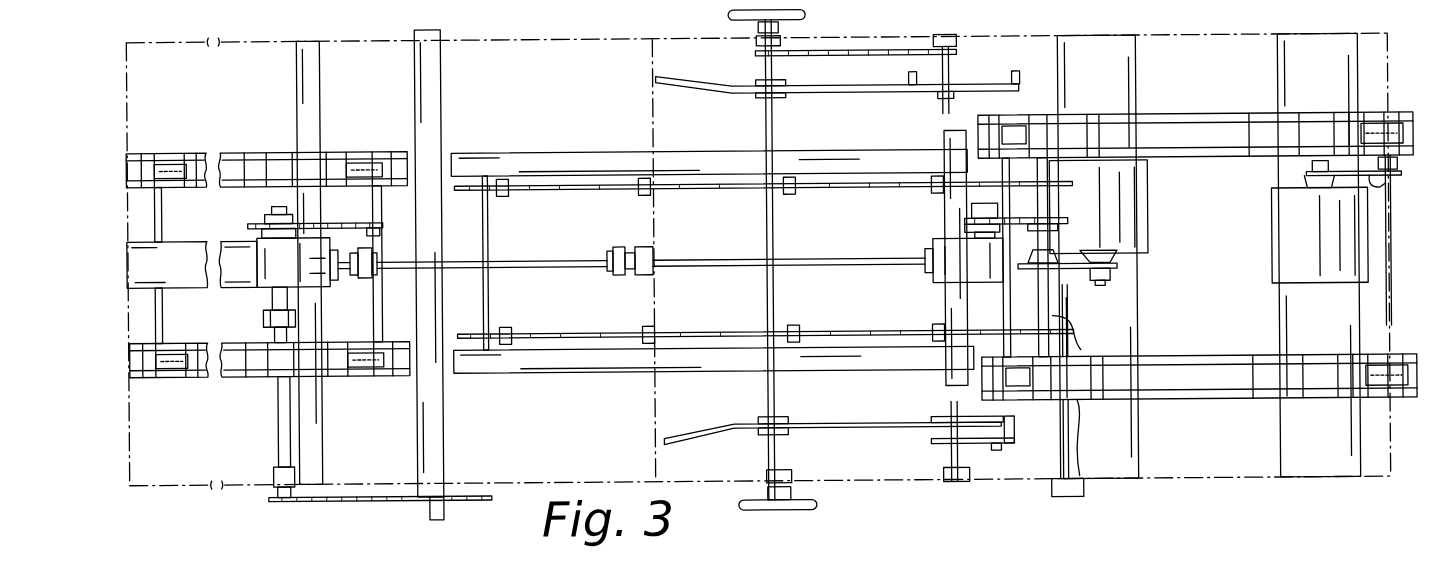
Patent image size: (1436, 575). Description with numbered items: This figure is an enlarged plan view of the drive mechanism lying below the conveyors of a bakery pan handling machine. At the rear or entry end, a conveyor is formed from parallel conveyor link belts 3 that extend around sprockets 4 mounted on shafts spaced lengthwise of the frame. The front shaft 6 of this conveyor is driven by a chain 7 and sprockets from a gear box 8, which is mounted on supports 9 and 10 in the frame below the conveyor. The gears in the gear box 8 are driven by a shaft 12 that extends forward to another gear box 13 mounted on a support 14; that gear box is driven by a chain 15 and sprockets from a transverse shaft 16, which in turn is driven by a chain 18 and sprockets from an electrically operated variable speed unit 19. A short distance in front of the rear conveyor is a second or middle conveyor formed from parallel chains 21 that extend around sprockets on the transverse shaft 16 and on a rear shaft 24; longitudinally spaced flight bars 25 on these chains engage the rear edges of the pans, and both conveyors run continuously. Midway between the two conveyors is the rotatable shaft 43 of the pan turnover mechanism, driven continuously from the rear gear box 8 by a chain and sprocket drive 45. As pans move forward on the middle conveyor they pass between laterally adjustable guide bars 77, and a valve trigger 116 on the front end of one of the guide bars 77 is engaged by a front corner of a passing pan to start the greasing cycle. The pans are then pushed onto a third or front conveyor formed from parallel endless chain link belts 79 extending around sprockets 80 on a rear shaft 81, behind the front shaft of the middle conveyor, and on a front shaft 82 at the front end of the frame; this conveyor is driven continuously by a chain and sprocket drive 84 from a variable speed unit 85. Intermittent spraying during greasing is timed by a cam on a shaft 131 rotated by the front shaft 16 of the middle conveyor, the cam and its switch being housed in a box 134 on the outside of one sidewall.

The conveyor link belts 3 is at (197, 150).
The sprockets 4 is at (176, 373).
The front shaft 6 is at (382, 314).
The chain 7 is at (350, 220).
The gear box 8 is at (280, 270).
The support 9 is at (226, 284).
The support 10 is at (321, 117).
The shaft 12 is at (712, 267).
The gear box 13 is at (962, 269).
The support 14 is at (947, 305).
The chain 15 is at (1031, 219).
The transverse shaft 16 is at (1060, 319).
The chain 18 is at (1070, 272).
The variable speed unit 19 is at (1087, 216).
The chains 21 is at (563, 189).
The rear shaft 24 is at (488, 247).
The flight bars 25 is at (793, 196).
The rotatable shaft 43 is at (443, 412).
The chain and sprocket drive 45 is at (370, 498).
The guide bars 77 is at (840, 95).
The chain link belts 79 is at (1210, 121).
The sprockets 80 is at (1010, 138).
The rear shaft 81 is at (1003, 312).
The front shaft 82 is at (1392, 321).
The chain and sprocket drive 84 is at (1393, 190).
The variable speed unit 85 is at (1306, 247).
The valve trigger 116 is at (1014, 434).
The shaft 131 is at (1062, 453).
The box 134 is at (1050, 490).